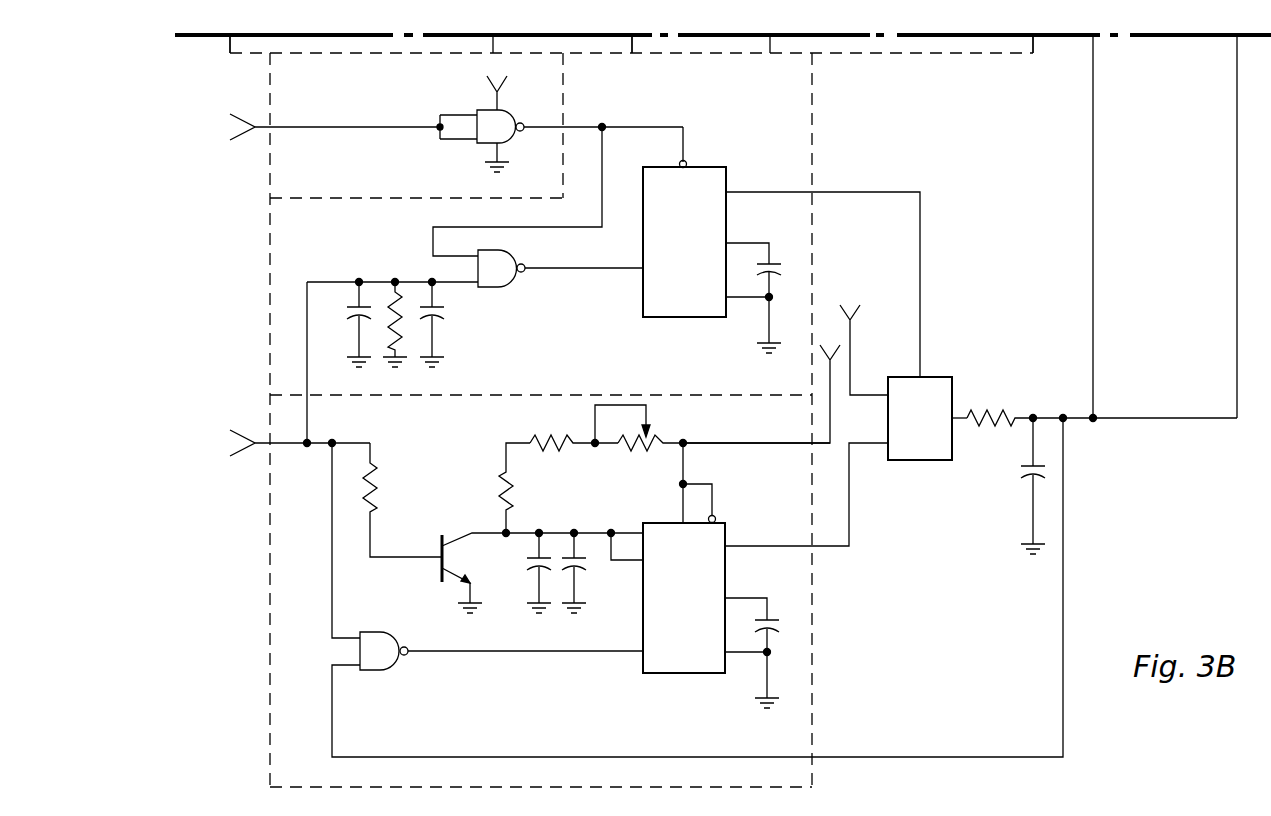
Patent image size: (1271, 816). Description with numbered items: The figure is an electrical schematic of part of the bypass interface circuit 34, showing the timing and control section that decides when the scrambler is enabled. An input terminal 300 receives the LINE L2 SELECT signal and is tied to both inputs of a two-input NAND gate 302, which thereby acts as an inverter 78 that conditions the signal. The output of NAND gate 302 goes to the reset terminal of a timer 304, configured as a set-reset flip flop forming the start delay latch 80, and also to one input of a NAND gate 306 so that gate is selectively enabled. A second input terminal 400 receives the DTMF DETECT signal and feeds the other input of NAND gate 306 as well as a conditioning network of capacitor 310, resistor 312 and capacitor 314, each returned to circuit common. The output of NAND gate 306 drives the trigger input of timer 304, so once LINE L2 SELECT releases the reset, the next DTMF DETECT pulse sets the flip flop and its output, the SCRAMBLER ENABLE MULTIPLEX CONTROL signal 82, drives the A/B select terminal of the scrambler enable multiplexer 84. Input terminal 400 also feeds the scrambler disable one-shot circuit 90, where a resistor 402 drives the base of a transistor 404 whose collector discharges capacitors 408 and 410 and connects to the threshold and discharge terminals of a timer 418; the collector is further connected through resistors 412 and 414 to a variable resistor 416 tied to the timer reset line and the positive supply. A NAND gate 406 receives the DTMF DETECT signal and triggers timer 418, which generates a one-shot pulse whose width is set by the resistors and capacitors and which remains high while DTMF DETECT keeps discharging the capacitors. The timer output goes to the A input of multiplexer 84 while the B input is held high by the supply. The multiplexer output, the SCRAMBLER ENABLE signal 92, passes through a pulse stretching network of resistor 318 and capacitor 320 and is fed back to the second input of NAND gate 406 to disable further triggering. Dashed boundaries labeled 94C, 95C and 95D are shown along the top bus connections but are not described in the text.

The bypass interface circuit 34 is at (1113, 547).
The inverter 78 is at (268, 62).
The start delay latch 80 is at (268, 258).
The SCRAMBLER ENABLE MULTIPLEX CONTROL signal 82 is at (866, 192).
The scrambler enable multiplexer 84 is at (918, 462).
The scrambler disable one-shot circuit 90 is at (812, 662).
The SCRAMBLER ENABLE signal 92 is at (963, 417).
The bus line 94C is at (996, 53).
The bus line 95C is at (726, 53).
The bus line 95D is at (612, 53).
The input terminal 300 is at (258, 130).
The two-input NAND gate 302 is at (480, 112).
The timer 304 is at (728, 170).
The NAND gate 306 is at (515, 290).
The capacitor 310 is at (358, 317).
The resistor 312 is at (393, 295).
The capacitor 314 is at (436, 320).
The resistor 318 is at (998, 418).
The capacitor 320 is at (1030, 476).
The input terminal 400 is at (258, 447).
The resistor 402 is at (372, 478).
The transistor 404 is at (440, 572).
The NAND gate 406 is at (378, 672).
The capacitor 408 is at (530, 568).
The capacitor 410 is at (580, 570).
The resistor 412 is at (500, 466).
The resistor 414 is at (560, 455).
The variable resistor 416 is at (648, 418).
The timer 418 is at (730, 585).